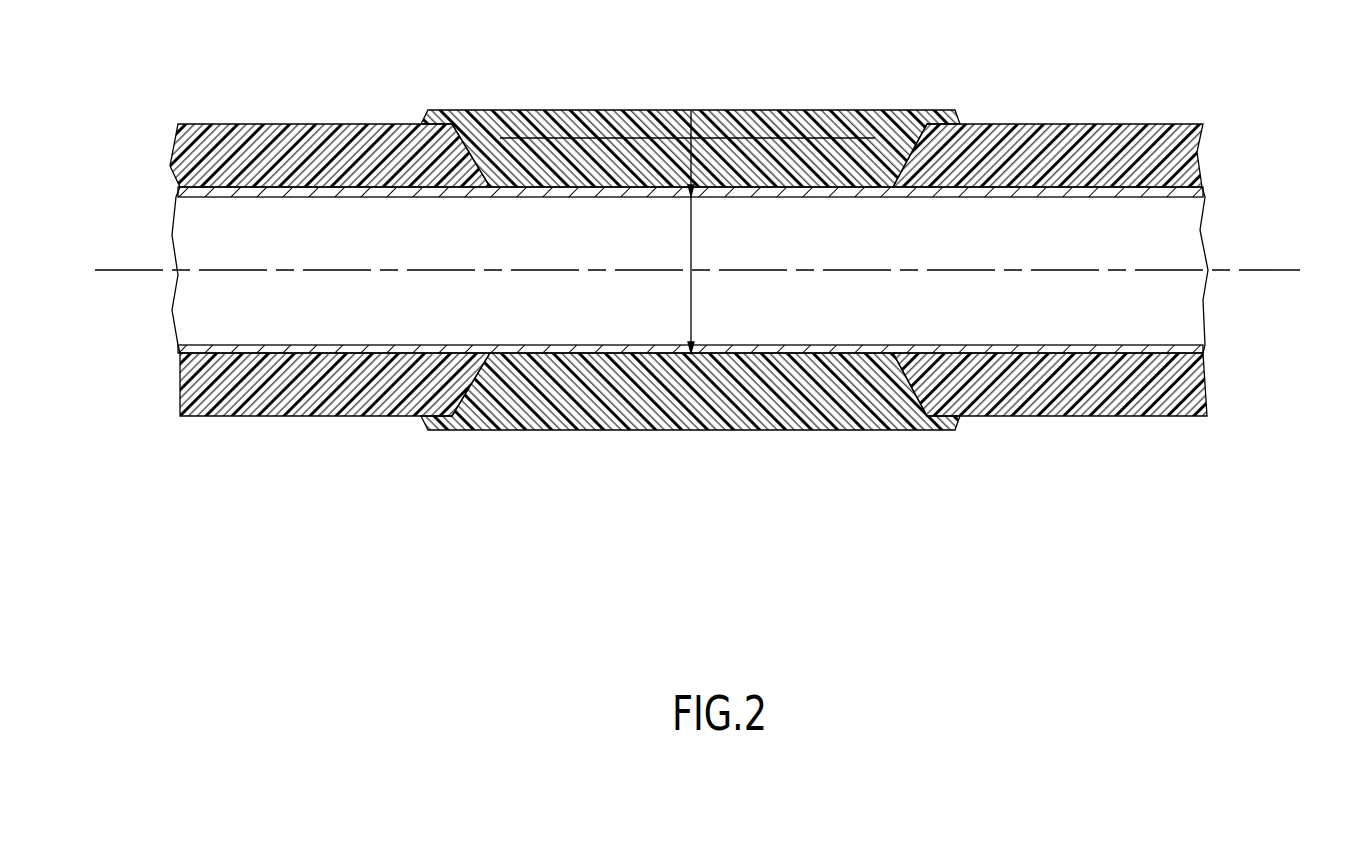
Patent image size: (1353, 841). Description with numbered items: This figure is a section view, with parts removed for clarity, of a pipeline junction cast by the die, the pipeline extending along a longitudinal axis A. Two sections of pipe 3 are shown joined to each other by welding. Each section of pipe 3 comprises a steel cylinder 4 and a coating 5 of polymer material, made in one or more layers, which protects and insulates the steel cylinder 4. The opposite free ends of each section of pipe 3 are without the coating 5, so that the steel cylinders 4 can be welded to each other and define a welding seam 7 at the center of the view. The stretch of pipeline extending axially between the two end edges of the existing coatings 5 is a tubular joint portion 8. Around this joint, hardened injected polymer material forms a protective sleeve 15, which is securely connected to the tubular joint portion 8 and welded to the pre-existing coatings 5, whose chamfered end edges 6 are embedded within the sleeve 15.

The section of pipe 3 is at (696, 299).
The steel cylinder 4 is at (207, 192).
The coating 5 is at (302, 150).
The tube end 6 is at (573, 366).
The welding seam 7 is at (690, 188).
The tubular joint portion 8 is at (853, 122).
The protective sleeve 15 is at (556, 118).
The longitudinal axis A is at (1280, 269).